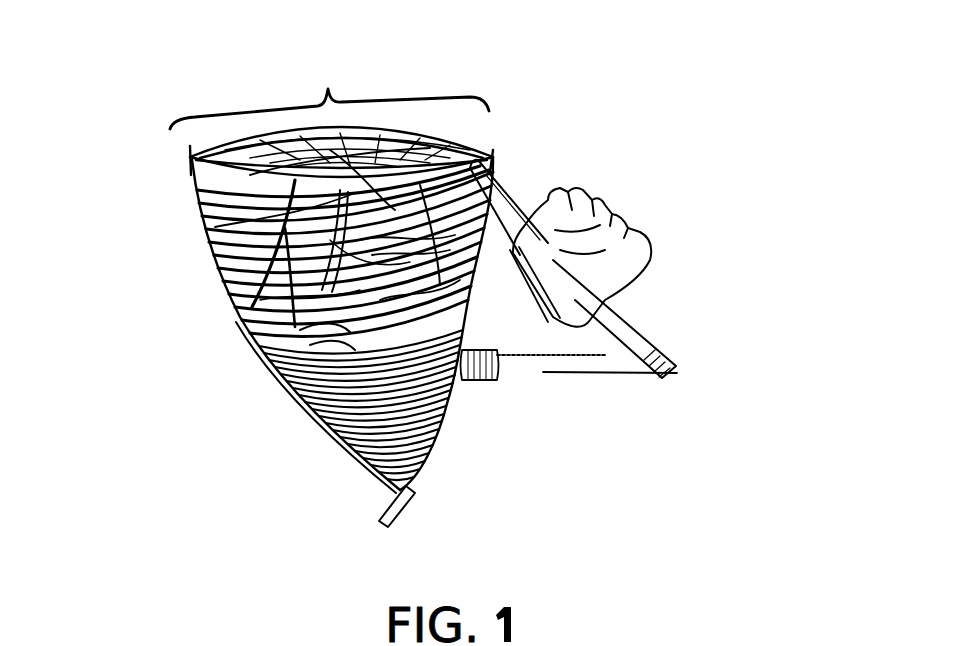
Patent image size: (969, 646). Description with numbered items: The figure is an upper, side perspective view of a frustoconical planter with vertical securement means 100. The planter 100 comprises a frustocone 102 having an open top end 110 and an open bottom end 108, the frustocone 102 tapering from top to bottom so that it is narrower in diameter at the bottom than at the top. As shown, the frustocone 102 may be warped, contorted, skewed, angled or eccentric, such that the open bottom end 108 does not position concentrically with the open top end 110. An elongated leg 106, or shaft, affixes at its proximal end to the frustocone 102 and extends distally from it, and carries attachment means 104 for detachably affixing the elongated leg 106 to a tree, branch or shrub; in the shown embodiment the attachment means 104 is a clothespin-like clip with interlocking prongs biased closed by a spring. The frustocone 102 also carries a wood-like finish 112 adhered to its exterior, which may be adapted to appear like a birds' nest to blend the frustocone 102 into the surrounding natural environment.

The frustoconical planter with vertical securement means 100 is at (808, 193).
The frustocone 102 is at (92, 173).
The attachment means 104 is at (613, 270).
The elongated leg 106 is at (607, 367).
The open bottom end 108 is at (420, 493).
The open top end 110 is at (333, 93).
The wood-like finish 112 is at (370, 150).